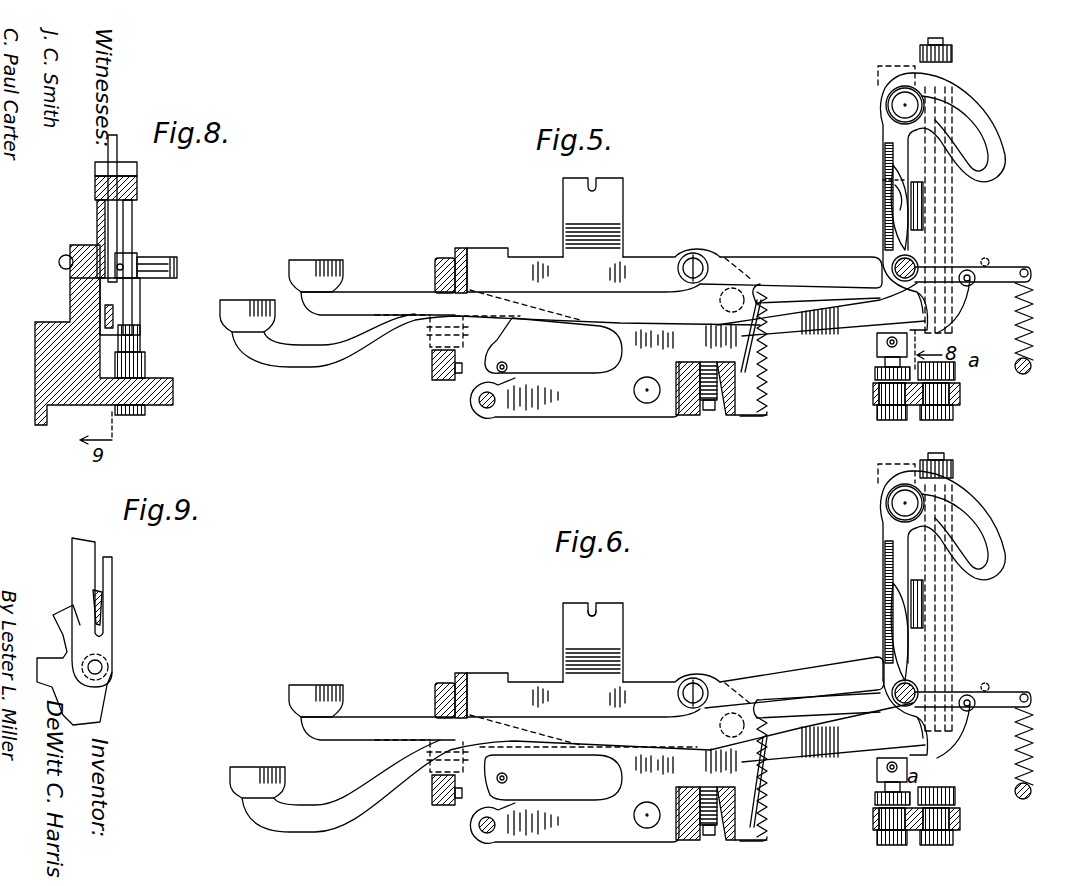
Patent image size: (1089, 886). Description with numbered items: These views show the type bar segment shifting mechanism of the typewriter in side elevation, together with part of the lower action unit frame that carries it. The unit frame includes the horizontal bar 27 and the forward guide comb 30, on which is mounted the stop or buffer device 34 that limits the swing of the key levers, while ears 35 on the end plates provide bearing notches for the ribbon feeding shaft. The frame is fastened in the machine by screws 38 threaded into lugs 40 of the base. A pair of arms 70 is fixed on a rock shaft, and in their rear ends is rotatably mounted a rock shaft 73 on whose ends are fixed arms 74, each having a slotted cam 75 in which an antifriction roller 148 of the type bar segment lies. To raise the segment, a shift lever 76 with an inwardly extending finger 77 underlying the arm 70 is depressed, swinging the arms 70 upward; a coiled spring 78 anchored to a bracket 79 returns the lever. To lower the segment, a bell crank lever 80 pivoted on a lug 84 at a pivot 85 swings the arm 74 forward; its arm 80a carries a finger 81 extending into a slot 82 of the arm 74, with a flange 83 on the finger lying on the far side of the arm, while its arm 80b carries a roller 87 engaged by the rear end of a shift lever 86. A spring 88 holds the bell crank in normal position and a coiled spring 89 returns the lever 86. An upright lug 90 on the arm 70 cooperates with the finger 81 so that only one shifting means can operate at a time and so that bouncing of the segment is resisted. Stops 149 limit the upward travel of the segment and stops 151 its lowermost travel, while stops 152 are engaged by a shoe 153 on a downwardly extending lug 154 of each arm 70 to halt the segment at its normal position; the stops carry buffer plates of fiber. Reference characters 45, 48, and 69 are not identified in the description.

In FIG. 5, the horizontal bar 27 is at (682, 414).
In FIG. 6, the horizontal bar 27 is at (740, 813).
In FIG. 6, the forward guide comb 30 is at (621, 592).
In FIG. 5, the stop or buffer device 34 is at (440, 258).
In FIG. 6, the stop or buffer device 34 is at (444, 718).
In FIG. 5, the ears 35 is at (593, 217).
In FIG. 6, the ears 35 is at (593, 642).
In FIG. 5, the screws 38 is at (712, 412).
In FIG. 6, the screws 38 is at (709, 822).
In FIG. 5, the lugs 40 is at (676, 367).
In FIG. 6, the lugs 40 is at (666, 811).
In FIG. 5, the pivot pin 45 is at (480, 412).
In FIG. 6, the pivot pin 45 is at (461, 830).
In FIG. 5, the lower plate lever 48 is at (473, 380).
In FIG. 6, the lower plate lever 48 is at (618, 796).
In FIG. 6, the link rod 69 is at (759, 782).
In FIG. 5, the arms 70 is at (797, 265).
In FIG. 6, the arms 70 is at (797, 677).
In FIG. 9, the arms 70 is at (55, 658).
In FIG. 5, the rock shaft 73 is at (918, 268).
In FIG. 6, the rock shaft 73 is at (944, 677).
In FIG. 8, the rock shaft 73 is at (173, 263).
In FIG. 9, the rock shaft 73 is at (102, 667).
In FIG. 5, the arm 74 is at (883, 163).
In FIG. 6, the arm 74 is at (869, 575).
In FIG. 5, the slotted cam 75 is at (988, 153).
In FIG. 6, the slotted cam 75 is at (974, 525).
In FIG. 5, the shift lever 76 is at (325, 350).
In FIG. 6, the shift lever 76 is at (367, 787).
In FIG. 5, the finger 77 is at (785, 293).
In FIG. 6, the finger 77 is at (798, 708).
In FIG. 5, the coiled spring 78 is at (795, 334).
In FIG. 6, the coiled spring 78 is at (793, 751).
In FIG. 5, the bracket 79 is at (762, 416).
In FIG. 6, the bracket 79 is at (775, 780).
In FIG. 5, the bell crank lever 80 is at (880, 292).
In FIG. 6, the bell crank lever 80 is at (899, 688).
In FIG. 8, the bell crank lever 80 is at (97, 227).
In FIG. 5, the arm of bell crank lever 80a is at (897, 195).
In FIG. 5, the arm of bell crank lever 80b is at (1000, 268).
In FIG. 6, the arm of bell crank lever 80b is at (988, 684).
In FIG. 5, the finger 81 is at (924, 200).
In FIG. 6, the finger 81 is at (951, 607).
In FIG. 8, the finger 81 is at (115, 190).
In FIG. 6, the slot 82 is at (962, 608).
In FIG. 8, the slot 82 is at (113, 222).
In FIG. 5, the flange 83 is at (880, 188).
In FIG. 8, the flange 83 is at (127, 167).
In FIG. 9, the flange 83 is at (87, 587).
In FIG. 8, the lug 84 is at (98, 290).
In FIG. 8, the pivot 85 is at (73, 276).
In FIG. 5, the shift lever 86 is at (344, 297).
In FIG. 6, the shift lever 86 is at (372, 712).
In FIG. 5, the roller 87 is at (988, 258).
In FIG. 6, the roller 87 is at (1012, 658).
In FIG. 5, the spring 88 is at (1014, 333).
In FIG. 6, the spring 88 is at (1006, 753).
In FIG. 5, the coiled spring 89 is at (747, 368).
In FIG. 5, the upright lug 90 is at (888, 222).
In FIG. 6, the upright lug 90 is at (869, 630).
In FIG. 5, the antifriction roller 148 is at (886, 104).
In FIG. 6, the antifriction roller 148 is at (871, 503).
In FIG. 5, the stops 149 is at (954, 52).
In FIG. 6, the stops 149 is at (971, 468).
In FIG. 5, the stops 151 is at (956, 373).
In FIG. 6, the stops 151 is at (950, 816).
In FIG. 5, the stops 152 is at (873, 392).
In FIG. 6, the stops 152 is at (891, 807).
In FIG. 5, the shoe 153 is at (876, 366).
In FIG. 6, the shoe 153 is at (922, 782).
In FIG. 5, the lug 154 is at (888, 298).
In FIG. 6, the lug 154 is at (875, 751).